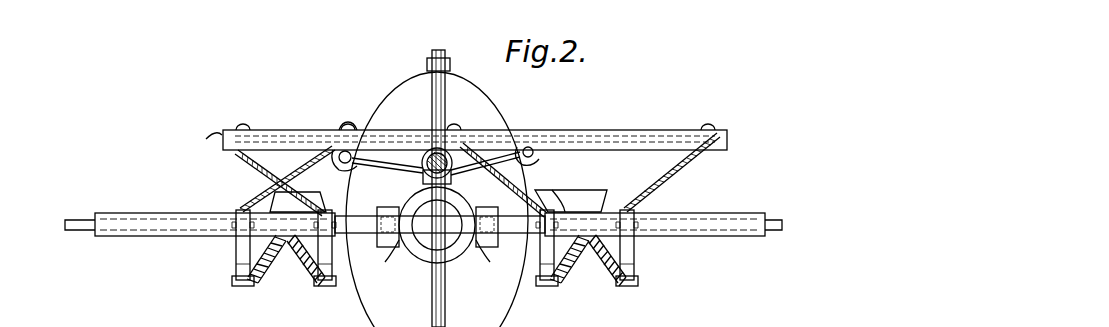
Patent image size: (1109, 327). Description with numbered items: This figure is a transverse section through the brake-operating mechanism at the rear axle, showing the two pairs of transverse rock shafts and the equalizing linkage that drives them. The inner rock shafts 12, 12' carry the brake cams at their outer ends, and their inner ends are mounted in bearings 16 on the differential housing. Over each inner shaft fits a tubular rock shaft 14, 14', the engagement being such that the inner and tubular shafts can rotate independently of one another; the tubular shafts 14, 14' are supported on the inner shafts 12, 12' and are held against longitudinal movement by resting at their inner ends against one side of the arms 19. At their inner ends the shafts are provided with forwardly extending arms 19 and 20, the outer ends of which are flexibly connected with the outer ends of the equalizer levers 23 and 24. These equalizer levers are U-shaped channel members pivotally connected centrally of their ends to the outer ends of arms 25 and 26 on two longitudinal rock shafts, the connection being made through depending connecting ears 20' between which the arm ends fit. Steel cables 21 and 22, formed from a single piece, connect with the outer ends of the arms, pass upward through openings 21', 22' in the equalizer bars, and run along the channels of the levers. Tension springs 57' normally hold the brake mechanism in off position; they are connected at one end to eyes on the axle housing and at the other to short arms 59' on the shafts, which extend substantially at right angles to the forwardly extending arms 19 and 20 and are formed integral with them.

The inner rock shaft 12 is at (80, 240).
The inner rock shaft 12' is at (774, 239).
The tubular rock shaft 14 is at (215, 237).
The tubular rock shaft 14' is at (655, 237).
The bearing 16 is at (392, 246).
The forwardly extending arm 19 is at (555, 208).
The forwardly extending arm 20 is at (429, 248).
The connecting ear 20' is at (337, 169).
The steel cable 21 is at (275, 183).
The opening 21' is at (202, 137).
The steel cable 22 is at (672, 172).
The opening 22' is at (287, 159).
The equalizer lever 23 is at (318, 131).
The equalizer lever 24 is at (552, 124).
The arm 25 is at (392, 166).
The arm 26 is at (474, 168).
The tension spring 57' is at (436, 265).
The short arm 59' is at (436, 294).